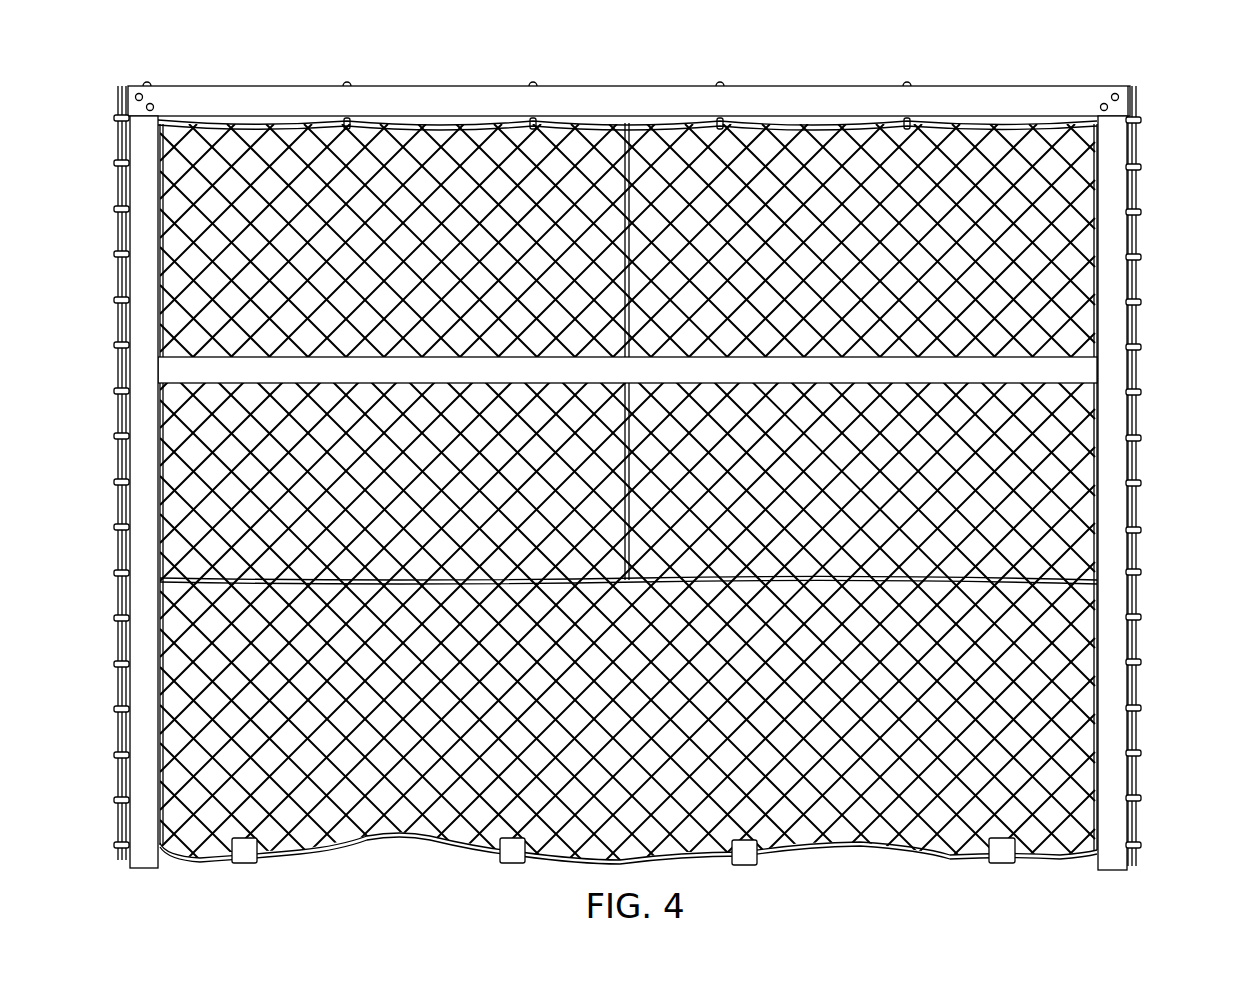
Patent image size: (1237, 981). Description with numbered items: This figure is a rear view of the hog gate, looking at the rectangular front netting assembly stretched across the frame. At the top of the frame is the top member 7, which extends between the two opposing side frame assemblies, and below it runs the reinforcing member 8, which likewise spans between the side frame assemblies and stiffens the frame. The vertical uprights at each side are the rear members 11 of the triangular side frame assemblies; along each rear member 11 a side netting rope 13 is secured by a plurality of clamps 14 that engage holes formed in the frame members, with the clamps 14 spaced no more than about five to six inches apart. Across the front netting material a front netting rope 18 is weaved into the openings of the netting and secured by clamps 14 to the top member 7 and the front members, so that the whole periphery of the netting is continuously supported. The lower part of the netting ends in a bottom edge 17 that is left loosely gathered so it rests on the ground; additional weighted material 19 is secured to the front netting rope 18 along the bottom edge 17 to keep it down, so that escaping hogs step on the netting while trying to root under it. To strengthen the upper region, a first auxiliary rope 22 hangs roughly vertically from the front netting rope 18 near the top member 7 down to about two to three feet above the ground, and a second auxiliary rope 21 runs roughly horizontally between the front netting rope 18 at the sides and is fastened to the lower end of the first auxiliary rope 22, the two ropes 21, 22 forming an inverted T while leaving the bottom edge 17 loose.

The top member 7 is at (790, 105).
The reinforcing member 8 is at (1073, 372).
The rear member 11 is at (140, 200).
The side netting rope 13 is at (1140, 233).
The clamps 14 is at (1140, 307).
The bottom edge 17 is at (872, 858).
The front netting rope 18 is at (957, 857).
The weighted material 19 is at (743, 862).
The second auxiliary rope 21 is at (1092, 556).
The first auxiliary rope 22 is at (601, 125).